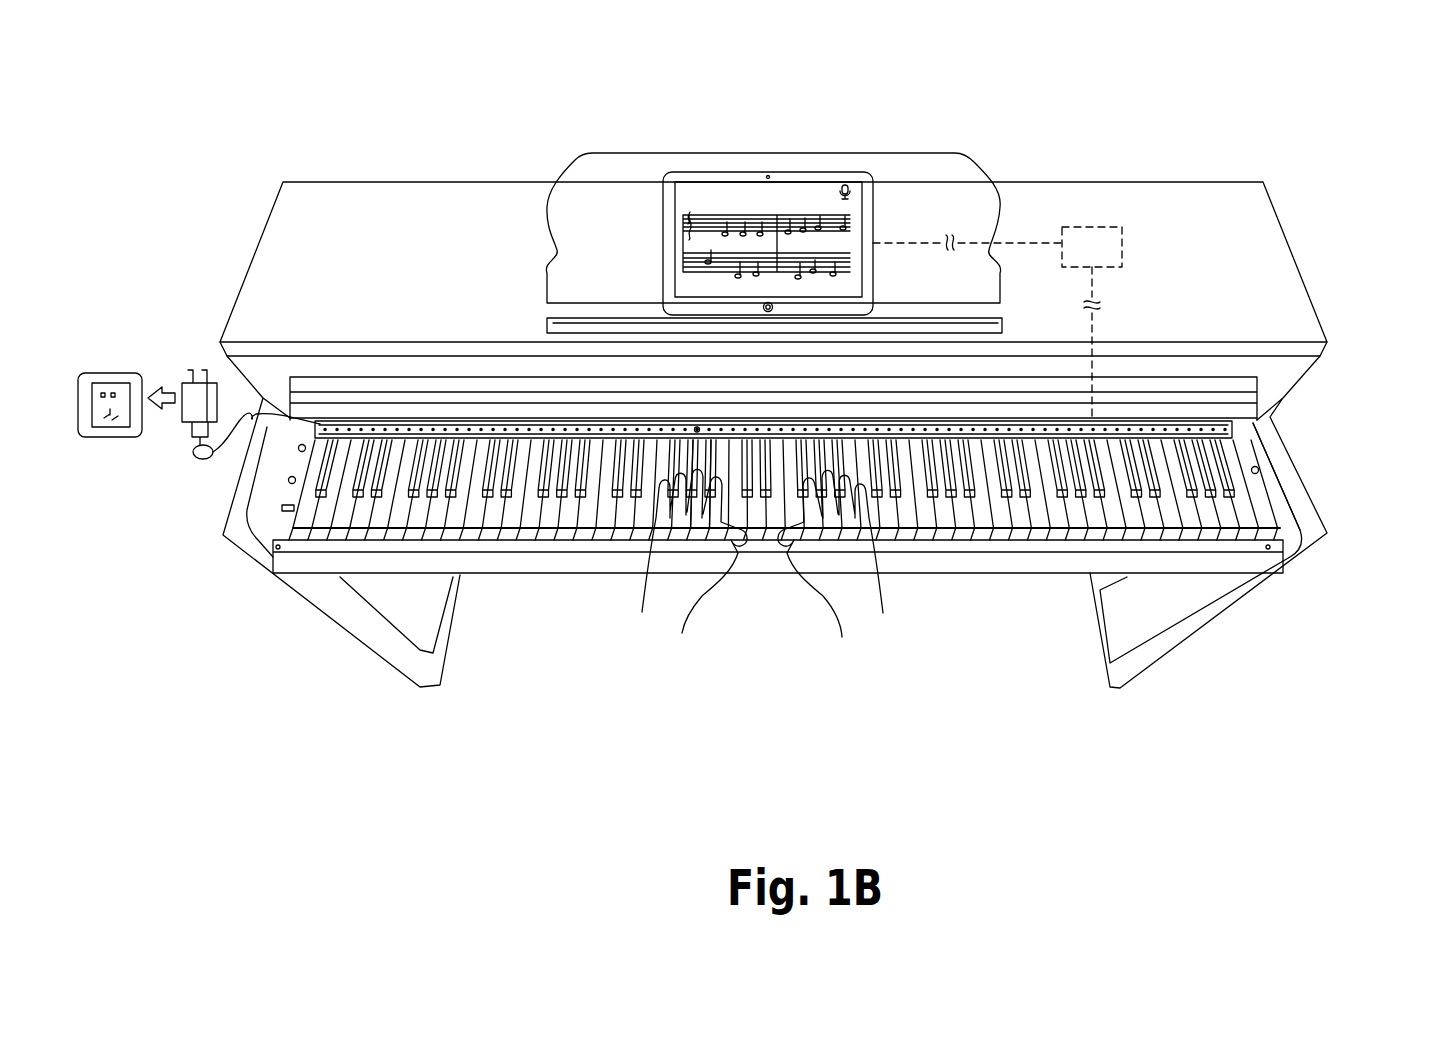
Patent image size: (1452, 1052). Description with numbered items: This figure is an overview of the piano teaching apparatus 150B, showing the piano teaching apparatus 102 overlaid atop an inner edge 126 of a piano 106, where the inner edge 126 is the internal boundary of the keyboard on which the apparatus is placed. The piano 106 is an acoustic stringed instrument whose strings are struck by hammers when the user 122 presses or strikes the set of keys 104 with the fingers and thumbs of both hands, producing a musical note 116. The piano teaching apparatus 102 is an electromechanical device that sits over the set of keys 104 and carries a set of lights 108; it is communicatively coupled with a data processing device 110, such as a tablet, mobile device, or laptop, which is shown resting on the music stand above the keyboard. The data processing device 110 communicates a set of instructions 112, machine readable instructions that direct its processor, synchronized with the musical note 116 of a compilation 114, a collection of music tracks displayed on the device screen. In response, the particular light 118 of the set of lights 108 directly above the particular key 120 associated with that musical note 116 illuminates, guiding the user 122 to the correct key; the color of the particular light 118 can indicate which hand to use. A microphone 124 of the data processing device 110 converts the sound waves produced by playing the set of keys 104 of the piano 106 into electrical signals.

The piano teaching apparatus 102 is at (652, 348).
The set of keys 104 is at (784, 489).
The piano 106 is at (833, 420).
The set of lights 108 is at (773, 358).
The data processing device 110 is at (745, 168).
The set of instructions 112 is at (1094, 227).
The compilation 114 is at (705, 183).
The musical note 116 is at (710, 260).
The particular light 118 is at (744, 387).
The particular key 120 is at (600, 433).
The user 122 is at (700, 595).
The microphone 124 is at (848, 187).
The inner edge 126 is at (1243, 428).
The overview of the piano teaching apparatus 150B is at (1277, 763).